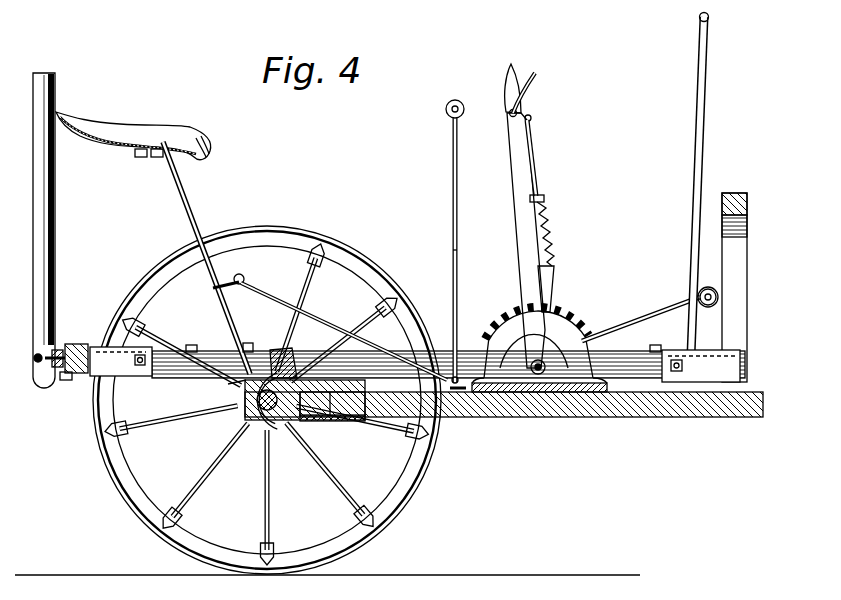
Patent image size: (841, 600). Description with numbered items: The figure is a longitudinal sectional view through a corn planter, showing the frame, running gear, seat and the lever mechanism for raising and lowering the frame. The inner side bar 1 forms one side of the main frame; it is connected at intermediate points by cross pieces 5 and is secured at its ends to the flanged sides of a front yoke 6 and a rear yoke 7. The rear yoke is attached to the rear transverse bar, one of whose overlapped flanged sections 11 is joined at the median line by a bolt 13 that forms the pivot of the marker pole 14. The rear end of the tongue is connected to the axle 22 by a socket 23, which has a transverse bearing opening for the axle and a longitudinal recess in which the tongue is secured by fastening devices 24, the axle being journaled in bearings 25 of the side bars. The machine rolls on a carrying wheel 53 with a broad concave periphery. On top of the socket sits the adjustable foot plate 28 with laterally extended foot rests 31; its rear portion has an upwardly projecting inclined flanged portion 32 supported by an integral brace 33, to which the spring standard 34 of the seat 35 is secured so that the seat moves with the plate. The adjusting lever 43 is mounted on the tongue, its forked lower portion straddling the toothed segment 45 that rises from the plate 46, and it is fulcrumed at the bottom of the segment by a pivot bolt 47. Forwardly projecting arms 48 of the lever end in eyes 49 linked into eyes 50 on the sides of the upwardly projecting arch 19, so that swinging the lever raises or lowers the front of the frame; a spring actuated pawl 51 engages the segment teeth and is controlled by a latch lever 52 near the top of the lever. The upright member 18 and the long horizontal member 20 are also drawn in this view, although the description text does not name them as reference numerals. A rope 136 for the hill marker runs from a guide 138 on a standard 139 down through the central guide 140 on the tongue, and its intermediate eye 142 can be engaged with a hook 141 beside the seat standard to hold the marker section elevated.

The inner side bar 1 is at (380, 366).
The cross piece 5 is at (190, 345).
The front yoke 6 is at (701, 366).
The rear yoke 7 is at (121, 361).
The flanged section 11 is at (76, 344).
The bolt 13 is at (66, 381).
The marker pole 14 is at (52, 262).
The rear post 18 is at (696, 128).
The upwardly projecting arch 19 is at (735, 194).
The ground beam 20 is at (668, 418).
The axle 22 is at (238, 418).
The socket 23 is at (280, 445).
The fastening devices 24 is at (350, 421).
The bearing 25 is at (283, 352).
The adjustable foot plate 28 is at (318, 418).
The foot rest 31 is at (345, 364).
The inclined flanged portion 32 is at (244, 344).
The brace 33 is at (236, 386).
The spring standard 34 is at (199, 218).
The seat 35 is at (112, 150).
The adjusting lever 43 is at (518, 186).
The toothed segment 45 is at (572, 318).
The plate 46 is at (528, 392).
The pivot bolt 47 is at (544, 362).
The forwardly projecting arm 48 is at (648, 318).
The eye 49 is at (700, 292).
The eye 50 is at (718, 300).
The spring actuated pawl 51 is at (551, 284).
The latch lever 52 is at (536, 90).
The carrying wheel 53 is at (140, 488).
The rope 136 is at (452, 220).
The guide 138 is at (446, 107).
The standard 139 is at (458, 276).
The central guide 140 is at (458, 392).
The hook 141 is at (222, 288).
The intermediate eye 142 is at (248, 270).